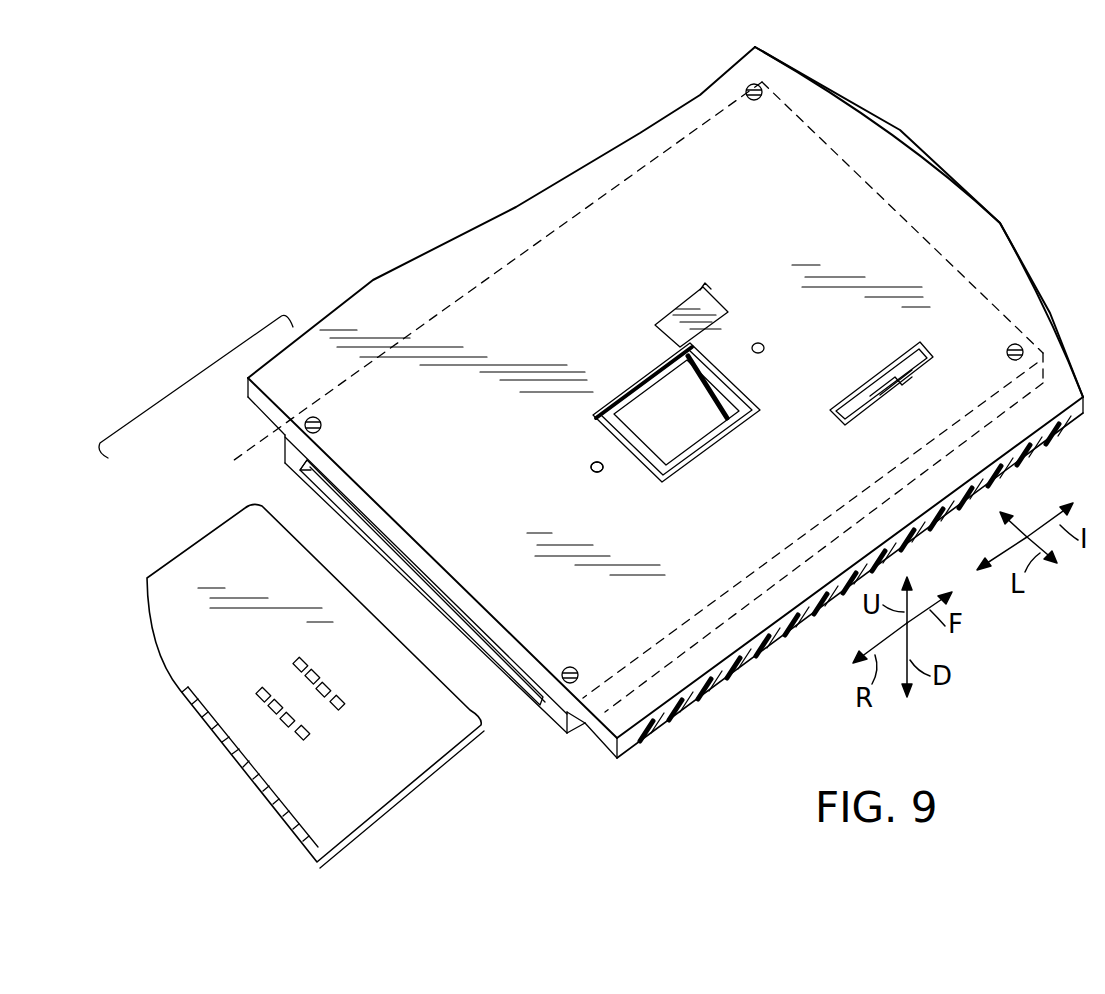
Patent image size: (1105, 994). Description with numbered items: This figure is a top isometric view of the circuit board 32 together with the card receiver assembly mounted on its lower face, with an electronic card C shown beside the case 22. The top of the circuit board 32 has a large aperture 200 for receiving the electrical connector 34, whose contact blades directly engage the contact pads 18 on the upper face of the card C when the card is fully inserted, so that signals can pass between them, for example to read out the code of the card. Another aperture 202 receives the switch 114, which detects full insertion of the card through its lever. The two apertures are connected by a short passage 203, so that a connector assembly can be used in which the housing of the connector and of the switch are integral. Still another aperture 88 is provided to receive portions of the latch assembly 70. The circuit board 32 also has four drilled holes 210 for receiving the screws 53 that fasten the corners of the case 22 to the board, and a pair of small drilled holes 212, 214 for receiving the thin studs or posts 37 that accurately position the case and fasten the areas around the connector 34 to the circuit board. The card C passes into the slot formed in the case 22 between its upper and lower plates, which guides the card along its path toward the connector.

The circuit board 32 is at (593, 737).
The drilled holes 210 is at (607, 397).
The screws 53 is at (312, 415).
The case 22 is at (525, 705).
The large aperture 200 is at (630, 378).
The electrical connector 34 is at (663, 410).
The short passage 203 is at (672, 330).
The aperture 202 is at (703, 288).
The switch 114 is at (703, 313).
The small drilled hole 212 is at (591, 467).
The studs 37 is at (597, 462).
The small drilled hole 214 is at (764, 347).
The aperture 88 is at (933, 348).
The latch assembly 70 is at (915, 383).
The electronic card C is at (353, 838).
The contact pads 18 is at (343, 713).